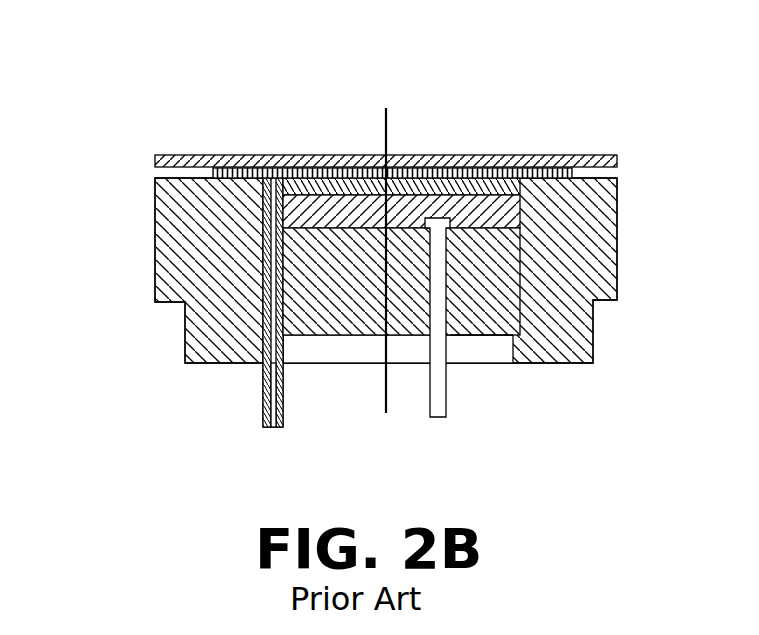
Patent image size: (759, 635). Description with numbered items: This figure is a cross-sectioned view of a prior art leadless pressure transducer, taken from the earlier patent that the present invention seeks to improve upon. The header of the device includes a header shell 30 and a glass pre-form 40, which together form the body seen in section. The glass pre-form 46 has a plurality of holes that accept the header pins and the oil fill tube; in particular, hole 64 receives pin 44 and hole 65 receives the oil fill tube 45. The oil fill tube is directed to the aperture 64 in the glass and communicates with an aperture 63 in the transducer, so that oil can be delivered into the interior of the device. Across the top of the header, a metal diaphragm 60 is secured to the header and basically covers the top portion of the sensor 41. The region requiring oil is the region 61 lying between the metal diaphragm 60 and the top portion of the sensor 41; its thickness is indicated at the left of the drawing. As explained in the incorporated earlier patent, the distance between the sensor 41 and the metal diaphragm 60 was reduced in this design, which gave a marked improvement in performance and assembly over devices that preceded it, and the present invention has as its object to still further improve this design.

The header shell 30 is at (137, 282).
The glass pre-form 40 is at (505, 255).
The sensor 41 is at (442, 178).
The pin 44 is at (263, 398).
The oil fill tube 45 is at (442, 398).
The glass pre-form 46 is at (517, 207).
The metal diaphragm 60 is at (293, 155).
The region requiring oil 61 is at (125, 215).
The aperture in the transducer 63 is at (272, 178).
The aperture in the glass 64 is at (283, 345).
The hole for the oil fill tube 65 is at (452, 337).